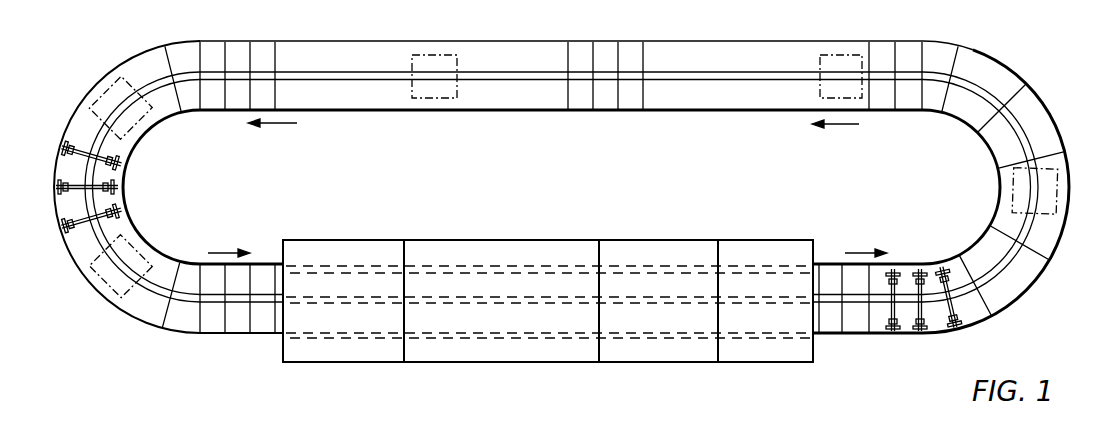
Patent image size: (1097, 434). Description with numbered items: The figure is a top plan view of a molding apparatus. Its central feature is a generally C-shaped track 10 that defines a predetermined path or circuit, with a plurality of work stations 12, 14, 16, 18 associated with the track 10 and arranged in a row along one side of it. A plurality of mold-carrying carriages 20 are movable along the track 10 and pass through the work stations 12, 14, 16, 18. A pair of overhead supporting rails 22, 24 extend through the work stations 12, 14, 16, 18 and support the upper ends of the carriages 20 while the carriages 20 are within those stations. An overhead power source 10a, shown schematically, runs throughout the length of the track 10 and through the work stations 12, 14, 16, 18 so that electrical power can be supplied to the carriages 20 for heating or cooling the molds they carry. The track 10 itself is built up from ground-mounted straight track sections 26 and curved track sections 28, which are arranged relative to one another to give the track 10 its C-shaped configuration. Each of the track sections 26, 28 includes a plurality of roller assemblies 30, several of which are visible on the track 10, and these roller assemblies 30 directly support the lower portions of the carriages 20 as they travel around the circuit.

The track 10 is at (1045, 244).
The overhead power source 10a is at (537, 78).
The work station 12 is at (347, 350).
The work station 14 is at (470, 350).
The work station 16 is at (658, 352).
The work station 18 is at (775, 353).
The mold-carrying carriage 20 is at (452, 55).
The overhead supporting rail 22 is at (556, 334).
The overhead supporting rail 24 is at (536, 262).
The straight track section 26 is at (210, 325).
The curved track section 28 is at (137, 313).
The roller assembly 30 is at (898, 300).